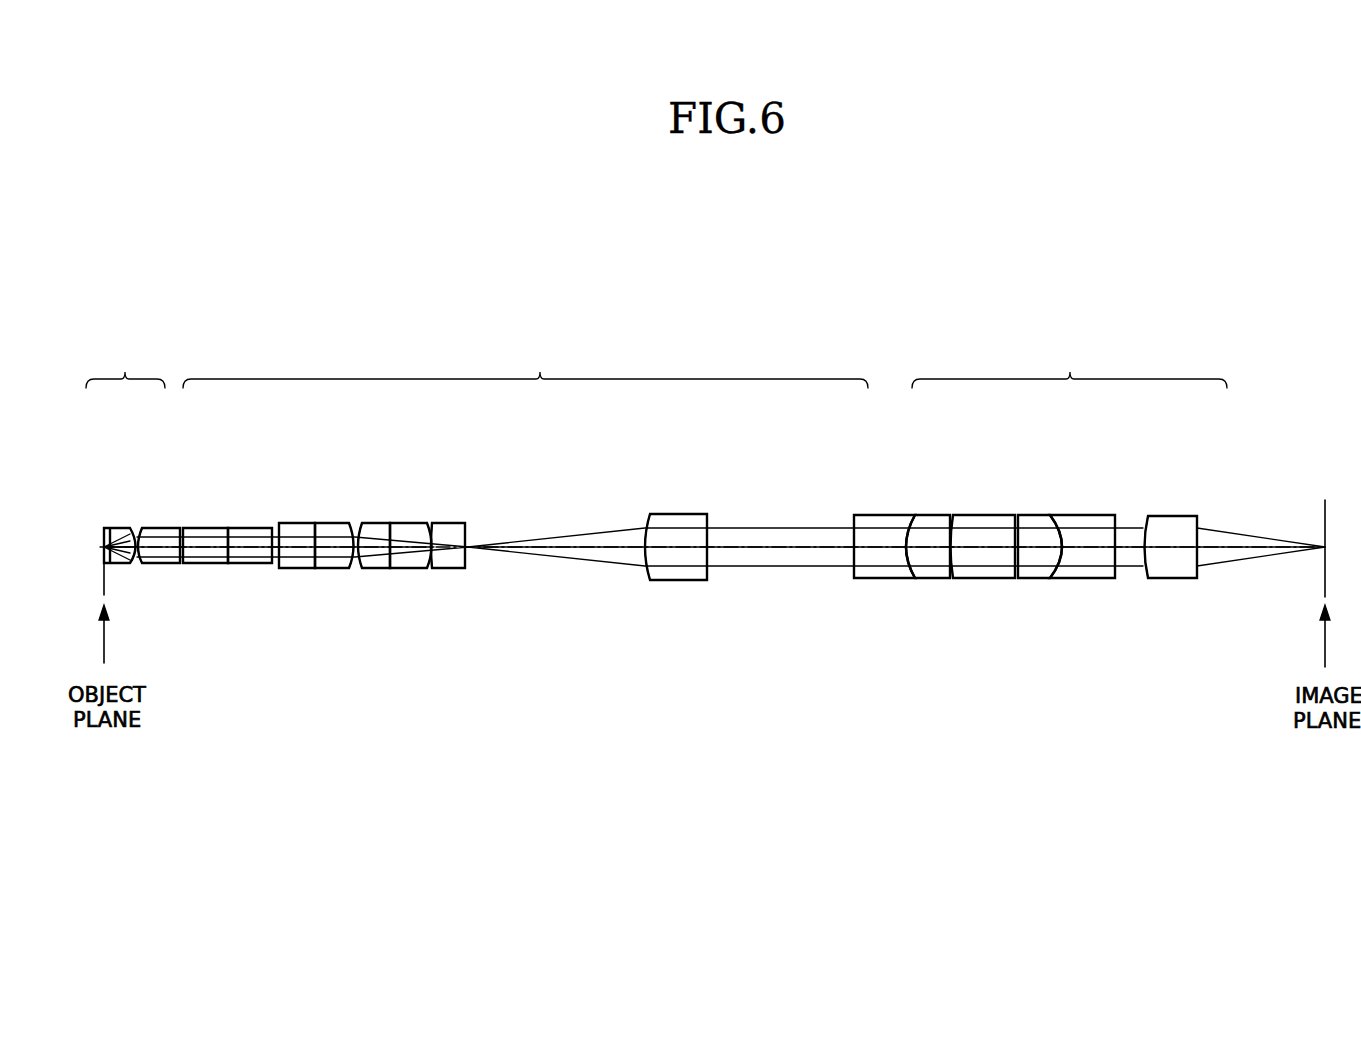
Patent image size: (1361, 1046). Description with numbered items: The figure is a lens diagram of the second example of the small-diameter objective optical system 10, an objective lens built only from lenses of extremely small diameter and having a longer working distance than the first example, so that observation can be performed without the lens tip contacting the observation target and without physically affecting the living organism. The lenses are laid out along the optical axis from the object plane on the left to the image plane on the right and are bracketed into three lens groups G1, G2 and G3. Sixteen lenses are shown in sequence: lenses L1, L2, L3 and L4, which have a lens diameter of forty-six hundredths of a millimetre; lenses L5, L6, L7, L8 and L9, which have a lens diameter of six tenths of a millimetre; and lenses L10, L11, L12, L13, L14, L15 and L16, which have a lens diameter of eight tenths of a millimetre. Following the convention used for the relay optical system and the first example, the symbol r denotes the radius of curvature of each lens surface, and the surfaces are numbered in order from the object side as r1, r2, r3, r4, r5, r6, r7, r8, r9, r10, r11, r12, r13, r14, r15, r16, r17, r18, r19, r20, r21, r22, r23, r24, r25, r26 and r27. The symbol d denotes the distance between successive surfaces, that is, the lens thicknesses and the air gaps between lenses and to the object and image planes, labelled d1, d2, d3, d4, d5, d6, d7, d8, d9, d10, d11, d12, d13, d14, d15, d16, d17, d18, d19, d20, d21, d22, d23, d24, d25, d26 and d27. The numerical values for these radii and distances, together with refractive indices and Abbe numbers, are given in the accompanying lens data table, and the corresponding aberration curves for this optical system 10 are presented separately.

The small-diameter objective optical system 10 is at (876, 302).
The lens group G1 is at (125, 365).
The lens group G2 is at (525, 365).
The lens group G3 is at (1069, 365).
The lens L1 is at (128, 527).
The lens L2 is at (145, 527).
The lens L3 is at (202, 527).
The lens L4 is at (250, 527).
The lens L5 is at (302, 522).
The lens L6 is at (320, 522).
The lens L7 is at (368, 522).
The lens L8 is at (410, 522).
The lens L9 is at (463, 522).
The lens L10 is at (693, 513).
The lens L11 is at (868, 514).
The lens L12 is at (933, 514).
The lens L13 is at (977, 514).
The lens L14 is at (1048, 514).
The lens L15 is at (1073, 514).
The lens L16 is at (1187, 515).
The distance between surfaces d1 is at (108, 540).
The distance between surfaces d2 is at (126, 545).
The distance between surfaces d3 is at (160, 545).
The distance between surfaces d4 is at (181, 545).
The distance between surfaces d5 is at (200, 545).
The distance between surfaces d6 is at (250, 545).
The distance between surfaces d7 is at (275, 545).
The distance between surfaces d8 is at (295, 545).
The distance between surfaces d9 is at (333, 545).
The distance between surfaces d10 is at (360, 545).
The distance between surfaces d11 is at (377, 545).
The distance between surfaces d12 is at (405, 545).
The distance between surfaces d13 is at (430, 545).
The distance between surfaces d14 is at (450, 545).
The distance between surfaces d15 is at (598, 545).
The distance between surfaces d16 is at (675, 545).
The distance between surfaces d17 is at (780, 545).
The distance between surfaces d18 is at (865, 545).
The distance between surfaces d19 is at (918, 545).
The distance between surfaces d20 is at (954, 545).
The distance between surfaces d21 is at (988, 545).
The distance between surfaces d22 is at (1014, 545).
The distance between surfaces d23 is at (1038, 545).
The distance between surfaces d24 is at (1100, 545).
The distance between surfaces d25 is at (1133, 545).
The distance between surfaces d26 is at (1170, 545).
The distance between surfaces d27 is at (1250, 540).
The radius of curvature r1 is at (110, 565).
The radius of curvature r2 is at (129, 565).
The radius of curvature r3 is at (147, 565).
The radius of curvature r4 is at (174, 565).
The radius of curvature r5 is at (198, 565).
The radius of curvature r6 is at (224, 565).
The radius of curvature r7 is at (265, 565).
The radius of curvature r8 is at (285, 570).
The radius of curvature r9 is at (312, 570).
The radius of curvature r10 is at (347, 570).
The radius of curvature r11 is at (367, 570).
The radius of curvature r12 is at (395, 570).
The radius of curvature r13 is at (417, 570).
The radius of curvature r14 is at (442, 570).
The radius of curvature r15 is at (467, 571).
The radius of curvature r16 is at (647, 574).
The radius of curvature r17 is at (707, 575).
The radius of curvature r18 is at (852, 580).
The radius of curvature r19 is at (903, 580).
The radius of curvature r20 is at (943, 580).
The radius of curvature r21 is at (971, 580).
The radius of curvature r22 is at (1007, 580).
The radius of curvature r23 is at (1024, 580).
The radius of curvature r24 is at (1070, 580).
The radius of curvature r25 is at (1110, 580).
The radius of curvature r26 is at (1142, 575).
The radius of curvature r27 is at (1197, 580).